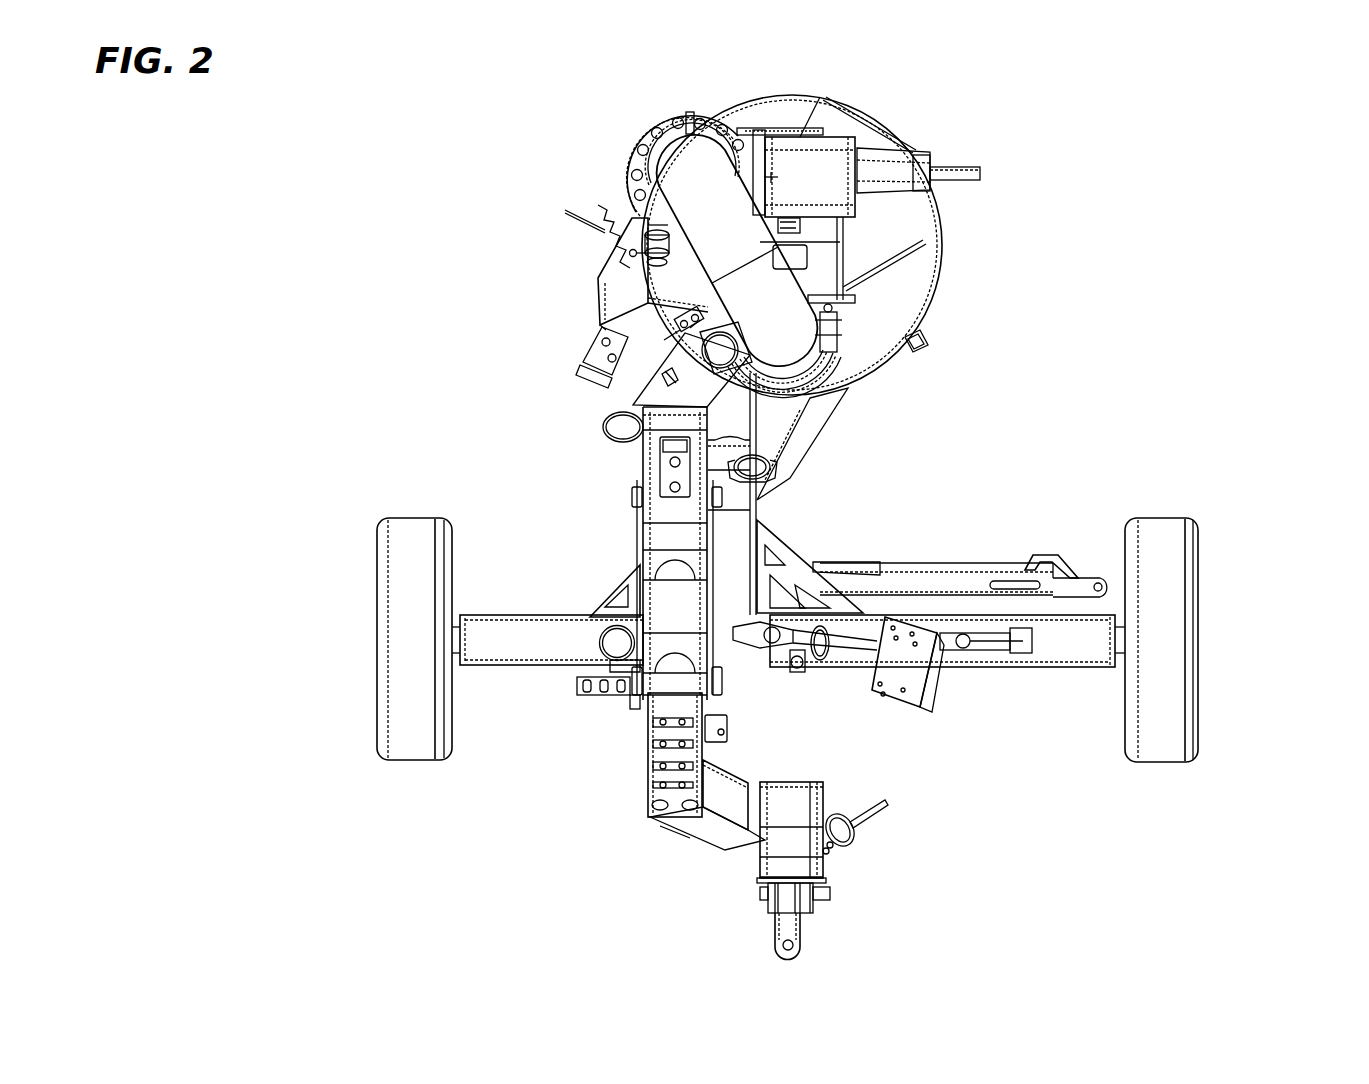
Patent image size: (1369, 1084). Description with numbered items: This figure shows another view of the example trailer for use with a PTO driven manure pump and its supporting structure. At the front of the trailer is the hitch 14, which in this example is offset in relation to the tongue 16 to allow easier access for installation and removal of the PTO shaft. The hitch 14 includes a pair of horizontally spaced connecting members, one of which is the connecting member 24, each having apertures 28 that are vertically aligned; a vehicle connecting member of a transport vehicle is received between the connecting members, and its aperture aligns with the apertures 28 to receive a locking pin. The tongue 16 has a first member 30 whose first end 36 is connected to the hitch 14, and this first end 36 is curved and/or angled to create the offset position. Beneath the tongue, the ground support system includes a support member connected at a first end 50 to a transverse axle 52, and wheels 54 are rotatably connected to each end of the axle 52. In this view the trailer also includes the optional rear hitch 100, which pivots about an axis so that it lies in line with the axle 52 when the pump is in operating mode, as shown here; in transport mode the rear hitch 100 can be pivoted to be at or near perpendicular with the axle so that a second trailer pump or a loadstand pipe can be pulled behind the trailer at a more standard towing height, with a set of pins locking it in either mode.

The hitch 14 is at (828, 868).
The tongue 16 is at (626, 738).
The connecting member 24 is at (773, 937).
The apertures 28 is at (793, 945).
The first member 30 is at (703, 748).
The first end 36 is at (738, 785).
The first end 50 is at (737, 662).
The transverse axle 52 is at (950, 620).
The wheels 54 is at (373, 660).
The rear hitch 100 is at (1037, 567).